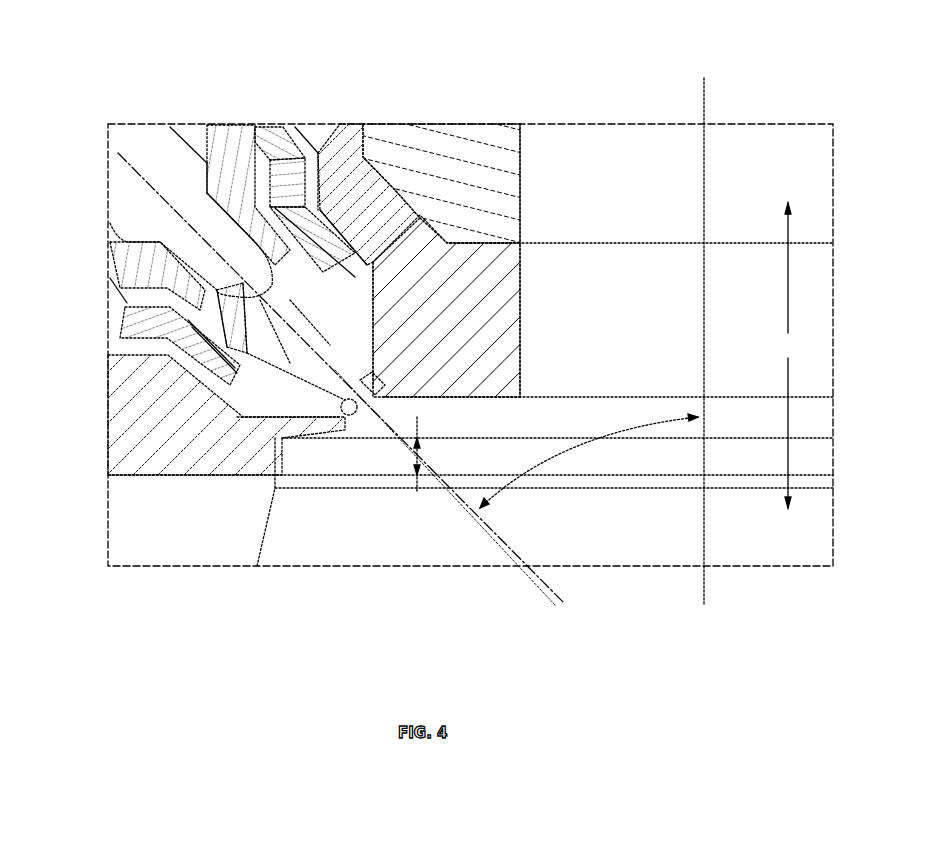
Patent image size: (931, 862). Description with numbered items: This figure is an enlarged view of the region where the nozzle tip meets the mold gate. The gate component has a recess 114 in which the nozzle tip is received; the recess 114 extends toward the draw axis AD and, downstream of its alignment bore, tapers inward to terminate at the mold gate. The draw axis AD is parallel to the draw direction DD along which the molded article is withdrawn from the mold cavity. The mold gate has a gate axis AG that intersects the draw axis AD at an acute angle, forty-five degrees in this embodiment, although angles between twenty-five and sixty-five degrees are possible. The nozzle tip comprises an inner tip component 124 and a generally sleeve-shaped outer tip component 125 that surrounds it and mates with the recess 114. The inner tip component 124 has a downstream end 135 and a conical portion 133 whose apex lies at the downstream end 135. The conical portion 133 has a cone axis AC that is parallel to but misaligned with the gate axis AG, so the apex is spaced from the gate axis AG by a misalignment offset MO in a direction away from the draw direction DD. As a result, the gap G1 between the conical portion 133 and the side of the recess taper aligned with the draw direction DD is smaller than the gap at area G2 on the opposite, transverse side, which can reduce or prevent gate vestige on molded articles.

The recess 114 is at (143, 348).
The inner tip component 124 is at (214, 150).
The outer tip component 125 is at (260, 136).
The conical portion 133 is at (343, 312).
The downstream end 135 is at (378, 388).
The gap G1 is at (380, 382).
The gap area G2 is at (342, 404).
The misalignment offset MO is at (417, 427).
The draw axis AD is at (700, 148).
The draw direction DD is at (788, 355).
The cone axis AC is at (543, 577).
The gate axis AG is at (533, 572).